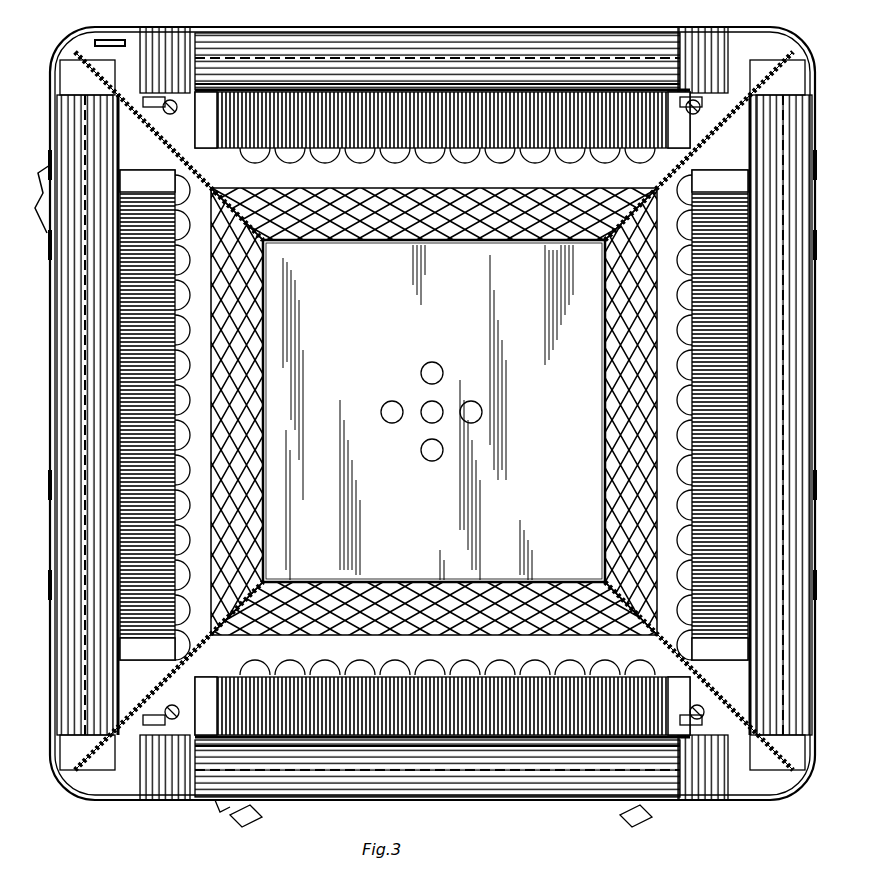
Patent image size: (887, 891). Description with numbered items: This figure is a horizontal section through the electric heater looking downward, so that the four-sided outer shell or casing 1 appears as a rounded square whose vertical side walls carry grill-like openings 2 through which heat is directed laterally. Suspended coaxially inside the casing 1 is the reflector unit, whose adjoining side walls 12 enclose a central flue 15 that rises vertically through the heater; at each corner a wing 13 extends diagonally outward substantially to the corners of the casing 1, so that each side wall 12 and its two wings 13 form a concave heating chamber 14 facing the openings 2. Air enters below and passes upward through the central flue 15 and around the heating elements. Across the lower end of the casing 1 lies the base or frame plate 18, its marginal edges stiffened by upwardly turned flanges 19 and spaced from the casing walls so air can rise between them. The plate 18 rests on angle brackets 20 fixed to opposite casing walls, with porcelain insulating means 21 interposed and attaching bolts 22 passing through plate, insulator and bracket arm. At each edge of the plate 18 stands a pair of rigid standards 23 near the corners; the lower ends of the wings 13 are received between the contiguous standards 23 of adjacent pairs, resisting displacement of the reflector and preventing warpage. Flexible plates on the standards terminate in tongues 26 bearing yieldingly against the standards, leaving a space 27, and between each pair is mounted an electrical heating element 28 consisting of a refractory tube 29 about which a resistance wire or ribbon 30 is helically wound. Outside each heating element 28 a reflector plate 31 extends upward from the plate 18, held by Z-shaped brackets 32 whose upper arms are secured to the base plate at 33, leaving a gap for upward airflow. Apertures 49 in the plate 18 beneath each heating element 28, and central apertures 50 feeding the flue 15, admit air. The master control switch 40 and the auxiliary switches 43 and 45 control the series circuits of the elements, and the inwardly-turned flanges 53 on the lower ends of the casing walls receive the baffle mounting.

The outer shell or casing 1 is at (712, 40).
The grill-like openings 2 is at (612, 40).
The side walls of reflector shell 12 is at (263, 268).
The wing 13 is at (230, 150).
The concave heating chamber 14 is at (434, 413).
The central flue 15 is at (434, 411).
The base or frame plate 18 is at (428, 412).
The upwardly turned flanges 19 is at (215, 80).
The angle brackets 20 is at (165, 40).
The insulating means 21 is at (435, 399).
The attaching bolts 22 is at (145, 95).
The standards 23 is at (422, 411).
The tongue 26 is at (135, 120).
The space 27 is at (432, 415).
The electrical heating element 28 is at (185, 445).
The refractory tubes 29 is at (185, 492).
The electrical resistance wire or ribbon 30 is at (185, 546).
The reflector plate 31 is at (560, 50).
The brackets 32 is at (300, 60).
The attachment of bracket upper arms 33 is at (434, 413).
The control switch 40 is at (39, 196).
The auxiliary switch 43 is at (484, 761).
The second auxiliary switch 45 is at (219, 821).
The apertures 49 is at (433, 411).
The central apertures 50 is at (460, 415).
The inwardly-turned flanges 53 is at (112, 40).